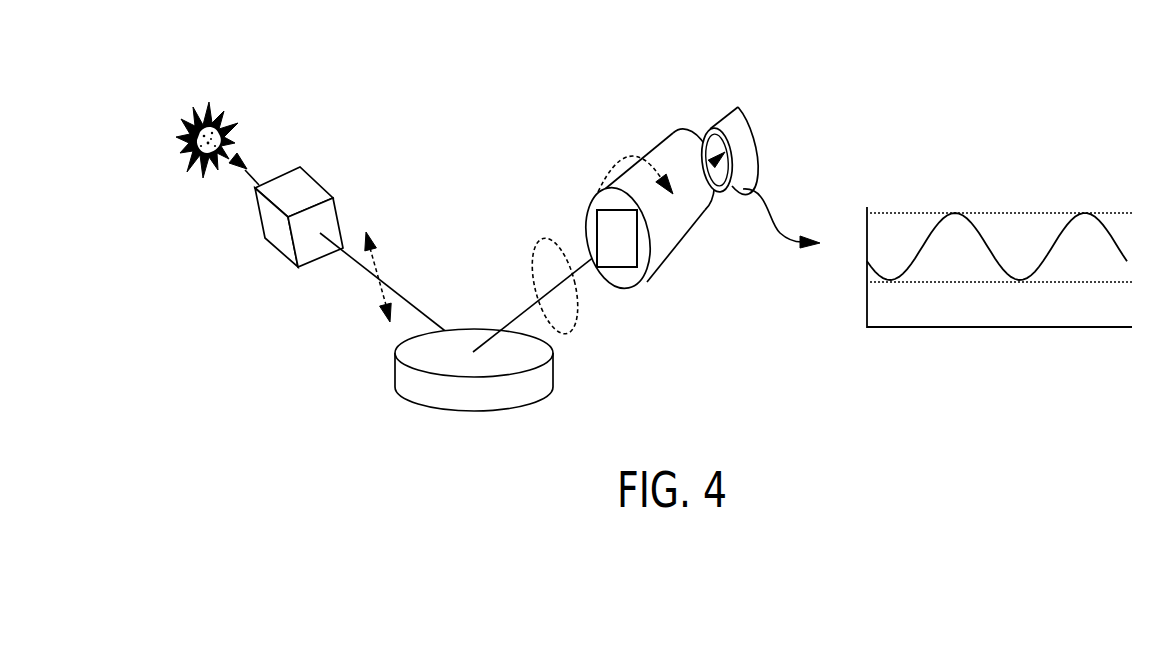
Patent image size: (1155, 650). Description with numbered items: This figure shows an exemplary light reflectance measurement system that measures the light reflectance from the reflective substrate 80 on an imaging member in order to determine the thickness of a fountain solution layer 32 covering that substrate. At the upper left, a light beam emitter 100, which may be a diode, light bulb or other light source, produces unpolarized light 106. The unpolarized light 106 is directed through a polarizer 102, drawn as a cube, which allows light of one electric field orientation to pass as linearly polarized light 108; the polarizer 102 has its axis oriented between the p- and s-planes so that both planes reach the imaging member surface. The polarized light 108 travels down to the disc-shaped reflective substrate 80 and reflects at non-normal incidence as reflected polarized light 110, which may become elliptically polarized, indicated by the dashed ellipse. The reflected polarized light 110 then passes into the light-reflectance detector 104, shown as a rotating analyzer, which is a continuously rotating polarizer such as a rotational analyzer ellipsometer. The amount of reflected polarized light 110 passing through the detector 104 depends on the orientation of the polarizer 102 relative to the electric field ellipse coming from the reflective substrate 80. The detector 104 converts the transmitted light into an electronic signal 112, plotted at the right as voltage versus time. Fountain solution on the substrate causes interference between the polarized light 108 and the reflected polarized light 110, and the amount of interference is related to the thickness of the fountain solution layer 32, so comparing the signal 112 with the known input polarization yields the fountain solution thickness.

The light beam emitter 100 is at (224, 105).
The polarizer 102 is at (314, 192).
The unpolarized light 106 is at (241, 171).
The polarized light 108 is at (352, 258).
The fountain solution layer 32 is at (473, 329).
The reflective substrate 80 is at (437, 392).
The reflected polarized light 110 is at (576, 270).
The light-reflectance detector 104 is at (670, 143).
The electronic signal 112 is at (967, 215).